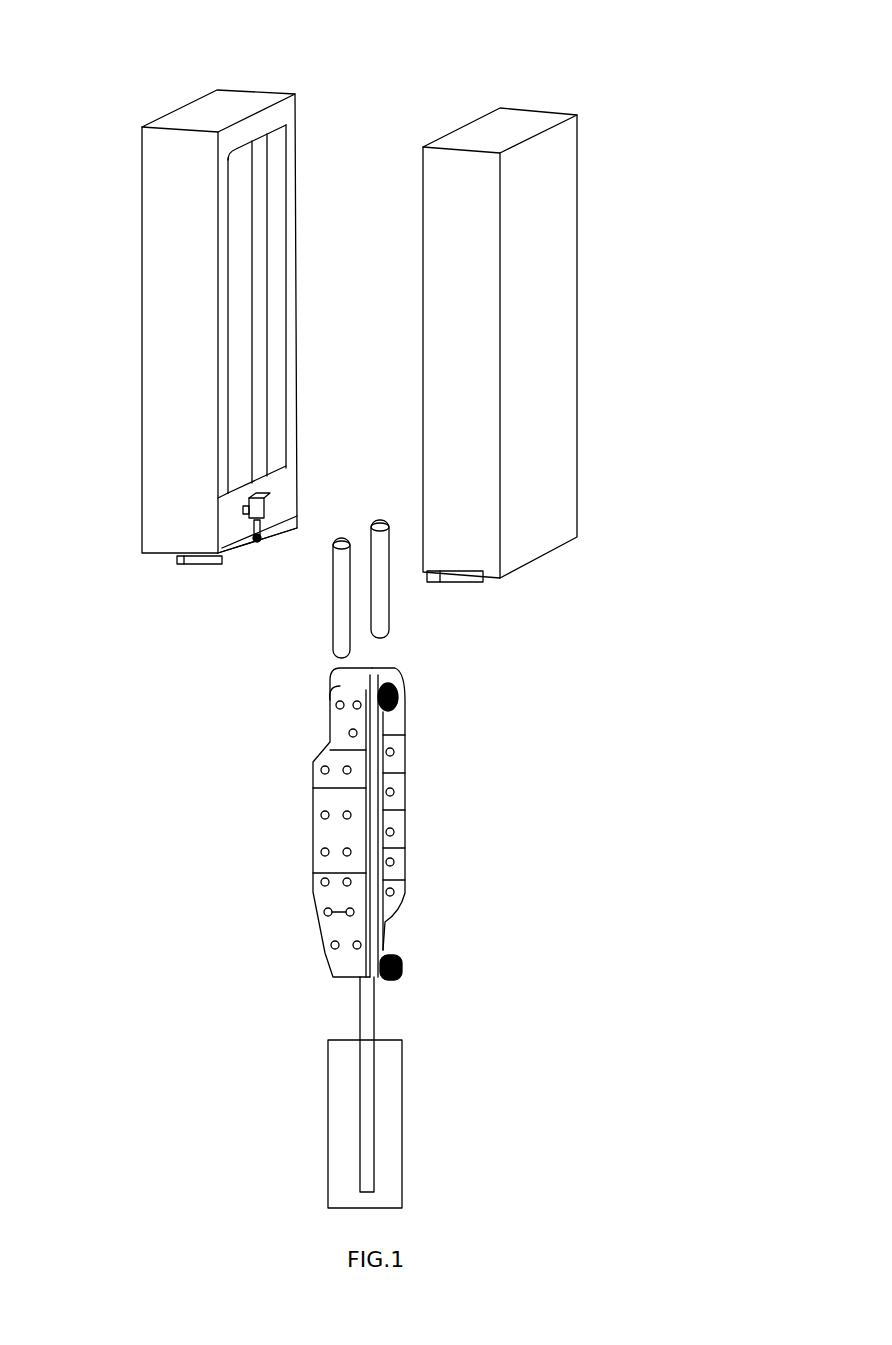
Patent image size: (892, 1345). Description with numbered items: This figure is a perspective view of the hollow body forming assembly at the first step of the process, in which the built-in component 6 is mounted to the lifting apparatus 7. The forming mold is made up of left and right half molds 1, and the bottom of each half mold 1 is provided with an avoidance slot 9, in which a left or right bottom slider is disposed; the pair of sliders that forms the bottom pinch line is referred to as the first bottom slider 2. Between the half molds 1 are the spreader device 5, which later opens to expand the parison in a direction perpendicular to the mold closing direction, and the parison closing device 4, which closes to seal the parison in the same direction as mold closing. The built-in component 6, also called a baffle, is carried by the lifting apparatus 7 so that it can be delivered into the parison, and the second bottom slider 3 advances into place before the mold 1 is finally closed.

The half mold 1 is at (228, 110).
The first bottom slider 2 is at (262, 503).
The second bottom slider 3 is at (254, 537).
The parison closing device 4 is at (213, 560).
The spreader device 5 is at (333, 590).
The built-in component 6 is at (390, 755).
The lifting apparatus 7 is at (357, 1015).
The avoidance slot 9 is at (248, 513).